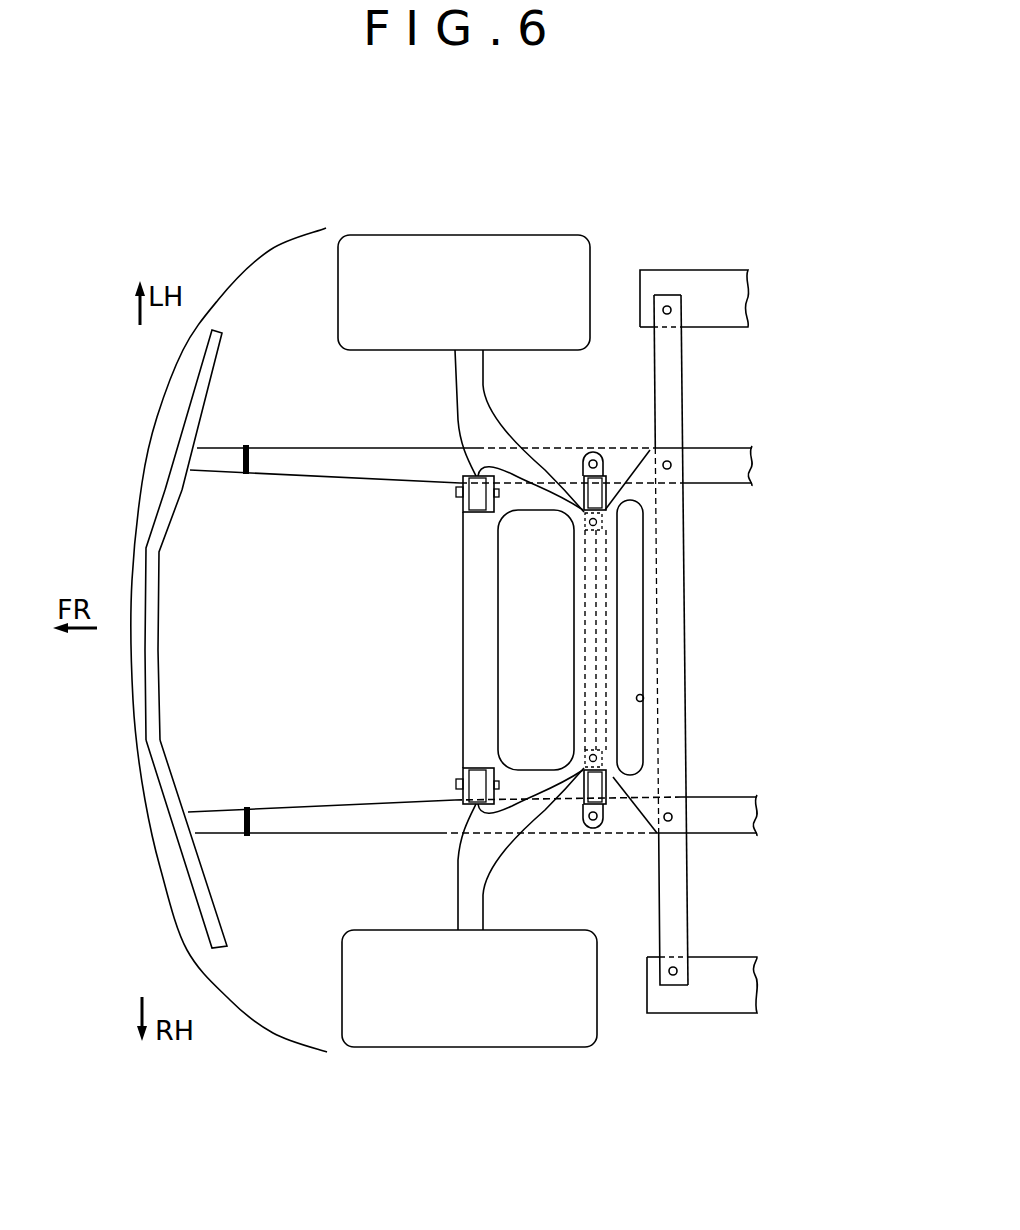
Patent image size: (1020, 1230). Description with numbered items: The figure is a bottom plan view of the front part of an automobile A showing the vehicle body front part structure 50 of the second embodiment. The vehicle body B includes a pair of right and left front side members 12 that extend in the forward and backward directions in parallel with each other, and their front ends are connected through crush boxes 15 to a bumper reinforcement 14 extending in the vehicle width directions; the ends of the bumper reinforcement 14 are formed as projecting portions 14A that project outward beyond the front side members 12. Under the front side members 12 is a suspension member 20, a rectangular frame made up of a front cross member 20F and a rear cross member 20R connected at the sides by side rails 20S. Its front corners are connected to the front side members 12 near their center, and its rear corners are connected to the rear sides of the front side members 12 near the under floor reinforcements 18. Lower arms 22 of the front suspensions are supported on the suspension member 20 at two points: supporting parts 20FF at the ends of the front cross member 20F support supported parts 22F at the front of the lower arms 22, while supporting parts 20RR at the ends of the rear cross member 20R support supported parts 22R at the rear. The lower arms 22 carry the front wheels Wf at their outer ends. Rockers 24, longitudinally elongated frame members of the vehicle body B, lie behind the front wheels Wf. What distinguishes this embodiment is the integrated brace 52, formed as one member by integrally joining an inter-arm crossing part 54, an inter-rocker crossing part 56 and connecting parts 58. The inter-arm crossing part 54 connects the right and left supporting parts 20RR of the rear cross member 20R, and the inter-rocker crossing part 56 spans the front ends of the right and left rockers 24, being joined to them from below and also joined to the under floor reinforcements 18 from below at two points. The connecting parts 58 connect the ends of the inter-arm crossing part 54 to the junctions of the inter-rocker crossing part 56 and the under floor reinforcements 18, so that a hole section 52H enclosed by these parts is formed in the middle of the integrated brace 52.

The front side member 12 is at (317, 478).
The bumper reinforcement 14 is at (234, 639).
The projecting portion 14A is at (207, 383).
The crush box 15 is at (225, 468).
The under floor reinforcement 18 is at (737, 455).
The suspension member 20 is at (481, 646).
The front cross member 20F is at (463, 596).
The rear cross member 20R is at (583, 612).
The side rail 20S is at (511, 506).
The supporting part 20FF is at (403, 687).
The supported part 22F is at (478, 512).
The supporting part 20RR is at (580, 610).
The supported part 22R is at (606, 503).
The lower arm 22 is at (477, 365).
The rocker 24 is at (718, 270).
The vehicle body front part structure 50 is at (714, 572).
The integrated brace 52 is at (714, 640).
The hole section 52H is at (770, 686).
The inter-arm crossing part 54 is at (692, 637).
The inter-rocker crossing part 56 is at (667, 642).
The connecting part 58 is at (633, 508).
The front wheel wf is at (475, 238).
The automobile A is at (319, 219).
The vehicle body B is at (775, 1019).